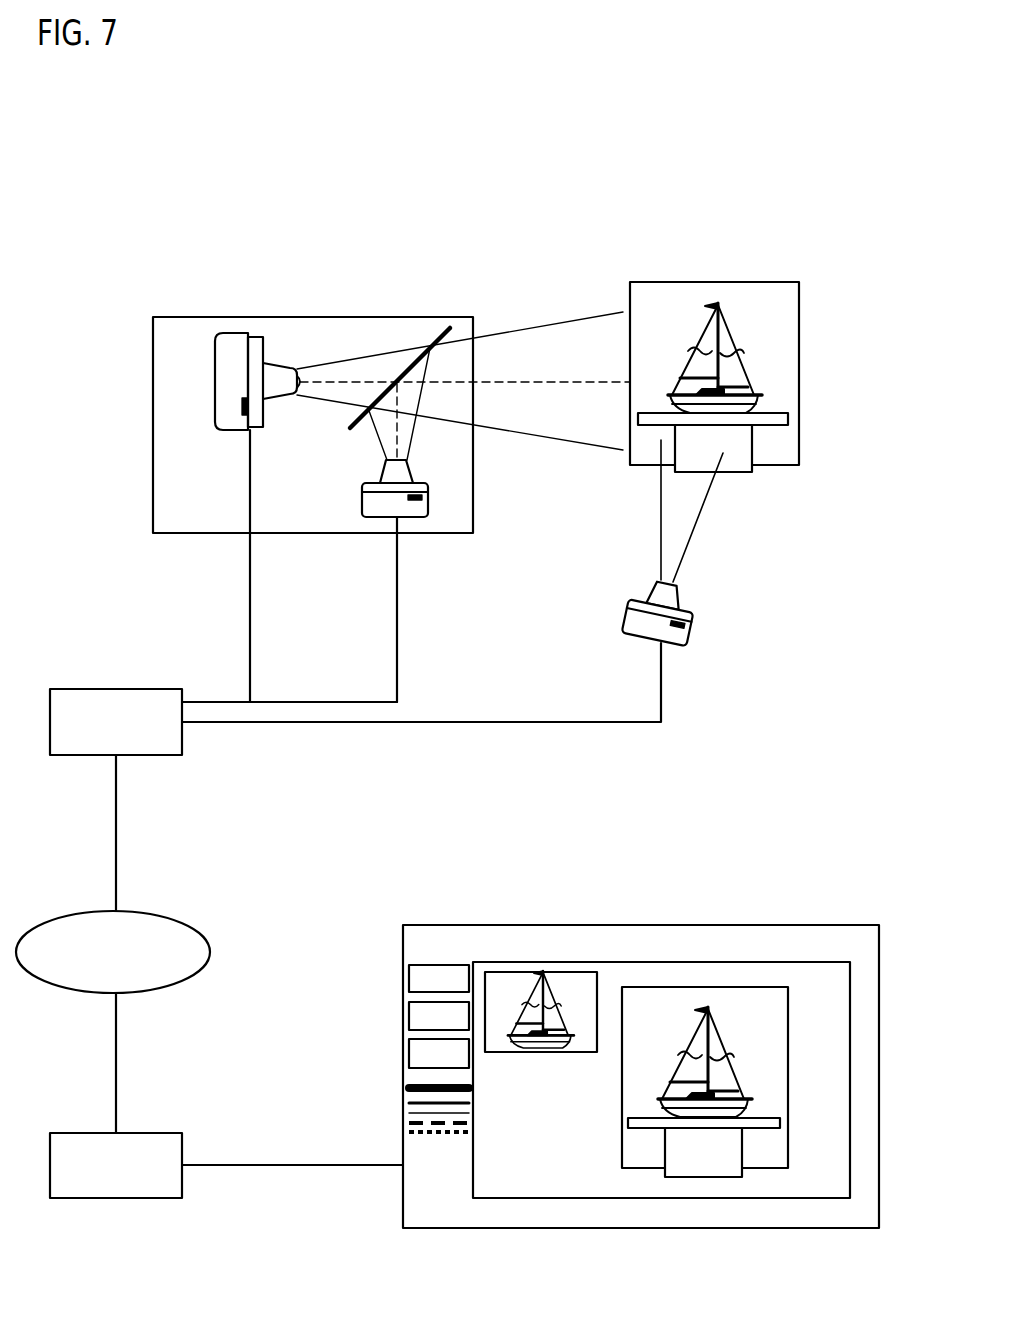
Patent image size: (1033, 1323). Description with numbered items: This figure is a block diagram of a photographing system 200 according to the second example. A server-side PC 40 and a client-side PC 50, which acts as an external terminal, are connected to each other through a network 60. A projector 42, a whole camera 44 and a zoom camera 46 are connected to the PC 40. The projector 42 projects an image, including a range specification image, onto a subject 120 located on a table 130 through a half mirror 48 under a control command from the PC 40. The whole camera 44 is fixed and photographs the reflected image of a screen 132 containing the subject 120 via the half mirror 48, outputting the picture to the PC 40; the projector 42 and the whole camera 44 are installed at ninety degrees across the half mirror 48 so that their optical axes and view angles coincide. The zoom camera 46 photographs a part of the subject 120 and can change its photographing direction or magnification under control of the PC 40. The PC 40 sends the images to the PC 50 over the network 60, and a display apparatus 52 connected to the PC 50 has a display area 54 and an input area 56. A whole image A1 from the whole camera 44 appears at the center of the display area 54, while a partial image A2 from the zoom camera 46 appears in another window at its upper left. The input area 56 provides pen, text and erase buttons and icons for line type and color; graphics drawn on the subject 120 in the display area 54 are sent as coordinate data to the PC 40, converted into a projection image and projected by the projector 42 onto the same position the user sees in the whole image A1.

The photographing system 200 is at (179, 218).
The projector 42 is at (240, 337).
The half mirror 48 is at (443, 330).
The whole camera 44 is at (410, 518).
The screen 132 is at (752, 282).
The subject 120 is at (738, 355).
The table 130 is at (752, 443).
The zoom camera 46 is at (693, 628).
The PC 40 is at (145, 688).
The network 60 is at (180, 913).
The PC 50 is at (145, 1132).
The display apparatus 52 is at (768, 923).
The display area 54 is at (663, 962).
The input area 56 is at (428, 950).
The partial image A2 is at (517, 972).
The whole image A1 is at (590, 1102).